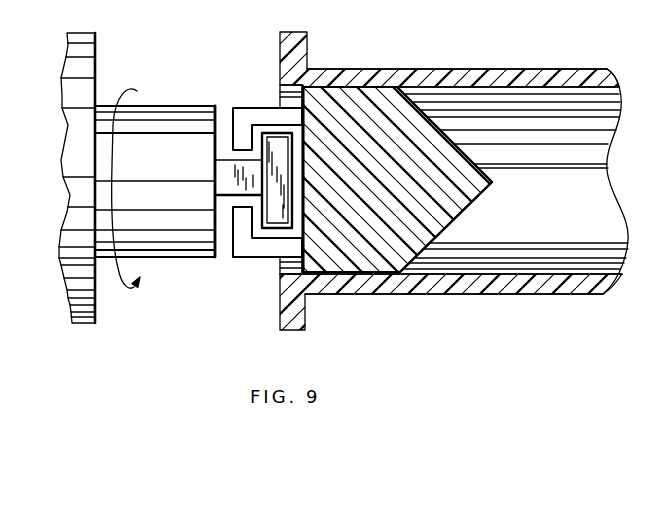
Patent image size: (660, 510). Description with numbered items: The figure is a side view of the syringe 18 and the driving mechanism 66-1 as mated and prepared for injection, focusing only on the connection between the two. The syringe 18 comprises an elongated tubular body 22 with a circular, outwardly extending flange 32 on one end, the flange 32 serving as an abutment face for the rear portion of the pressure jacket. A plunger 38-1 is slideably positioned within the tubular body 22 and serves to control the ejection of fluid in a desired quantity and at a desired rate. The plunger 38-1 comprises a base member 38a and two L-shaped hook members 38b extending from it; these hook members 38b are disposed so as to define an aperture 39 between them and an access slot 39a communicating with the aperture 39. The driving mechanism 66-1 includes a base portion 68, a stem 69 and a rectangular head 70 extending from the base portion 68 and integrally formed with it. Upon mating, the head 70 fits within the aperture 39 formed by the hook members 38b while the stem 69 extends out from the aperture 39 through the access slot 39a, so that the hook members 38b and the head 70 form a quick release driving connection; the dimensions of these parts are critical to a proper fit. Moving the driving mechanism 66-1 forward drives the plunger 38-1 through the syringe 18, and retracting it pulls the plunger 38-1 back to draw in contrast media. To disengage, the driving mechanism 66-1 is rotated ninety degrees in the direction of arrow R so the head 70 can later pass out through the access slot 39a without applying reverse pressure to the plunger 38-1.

The driving mechanism 66-1 is at (61, 225).
The base portion 68 is at (148, 118).
The arrow R is at (126, 203).
The stem 69 is at (222, 177).
The access slot 39a is at (243, 157).
The rectangular head 70 is at (262, 227).
The hook members 38b is at (258, 117).
The flange 32 is at (300, 58).
The tubular body 22 is at (553, 75).
The syringe 18 is at (548, 310).
The base member 38a is at (390, 258).
The plunger 38-1 is at (482, 214).
The aperture 39 is at (285, 128).